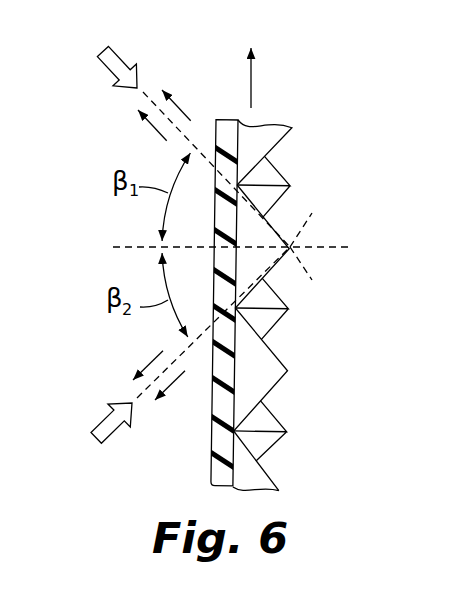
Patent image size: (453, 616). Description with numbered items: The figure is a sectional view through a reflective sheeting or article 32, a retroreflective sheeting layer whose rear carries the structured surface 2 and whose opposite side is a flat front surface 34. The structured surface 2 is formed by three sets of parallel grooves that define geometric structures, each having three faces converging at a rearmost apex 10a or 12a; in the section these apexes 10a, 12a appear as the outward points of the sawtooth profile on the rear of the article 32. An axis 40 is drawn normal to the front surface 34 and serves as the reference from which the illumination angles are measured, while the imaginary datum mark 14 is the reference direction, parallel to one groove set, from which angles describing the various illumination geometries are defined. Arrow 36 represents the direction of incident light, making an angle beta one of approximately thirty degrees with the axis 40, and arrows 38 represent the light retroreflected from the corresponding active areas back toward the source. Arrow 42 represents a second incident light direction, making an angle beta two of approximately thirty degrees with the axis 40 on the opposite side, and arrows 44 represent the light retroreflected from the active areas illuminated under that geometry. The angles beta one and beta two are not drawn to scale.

The structured rear surface 2 is at (273, 328).
The apex of structure 10 10a is at (294, 186).
The apex of structure 12 12a is at (293, 251).
The imaginary datum mark 14 is at (253, 90).
The reflective sheeting or article 32 is at (328, 120).
The front surface 34 is at (212, 458).
The arrow indicating incident light direction 36 is at (107, 52).
The arrows indicating retroreflected light 38 is at (179, 110).
The axis 40 is at (339, 247).
The arrow indicating second incident light direction 42 is at (100, 435).
The arrows indicating retroreflected light 44 is at (150, 357).